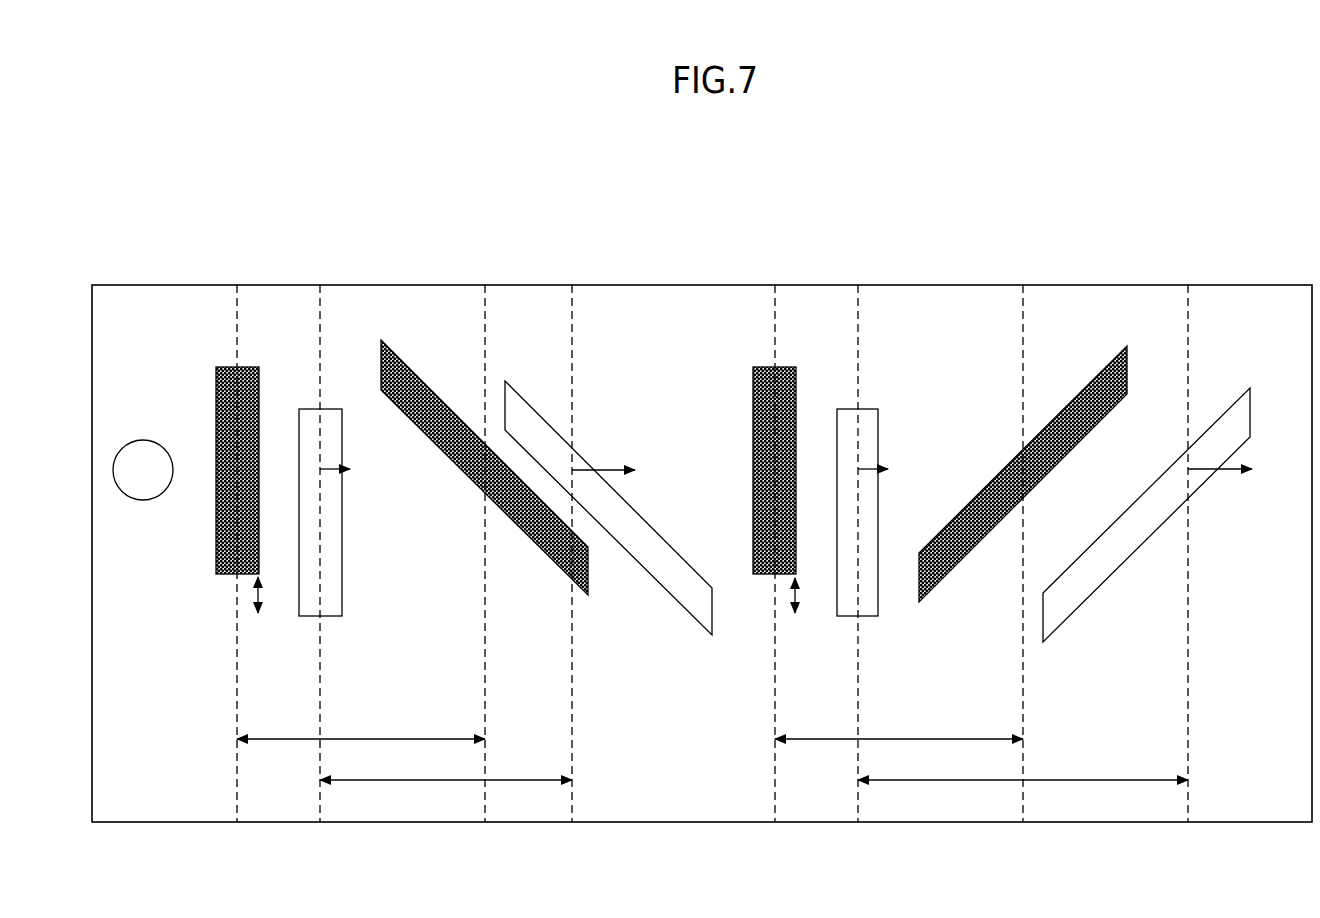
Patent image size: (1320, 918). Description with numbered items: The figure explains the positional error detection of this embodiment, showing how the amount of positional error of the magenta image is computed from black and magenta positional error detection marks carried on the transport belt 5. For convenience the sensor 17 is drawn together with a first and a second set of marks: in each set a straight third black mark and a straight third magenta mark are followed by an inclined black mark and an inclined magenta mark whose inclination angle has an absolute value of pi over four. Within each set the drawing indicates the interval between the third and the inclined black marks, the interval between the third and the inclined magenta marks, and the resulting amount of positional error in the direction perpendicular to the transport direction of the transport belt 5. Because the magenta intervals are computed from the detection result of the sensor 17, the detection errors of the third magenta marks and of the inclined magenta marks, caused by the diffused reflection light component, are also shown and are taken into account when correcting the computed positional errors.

The transport belt 5 is at (1252, 284).
The sensor 17 is at (143, 500).